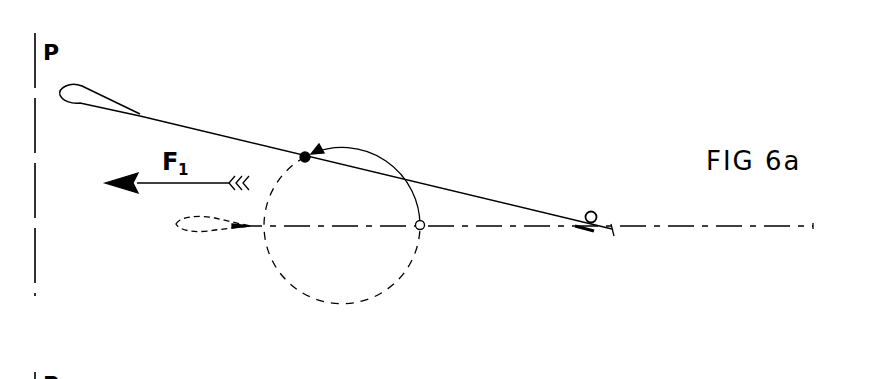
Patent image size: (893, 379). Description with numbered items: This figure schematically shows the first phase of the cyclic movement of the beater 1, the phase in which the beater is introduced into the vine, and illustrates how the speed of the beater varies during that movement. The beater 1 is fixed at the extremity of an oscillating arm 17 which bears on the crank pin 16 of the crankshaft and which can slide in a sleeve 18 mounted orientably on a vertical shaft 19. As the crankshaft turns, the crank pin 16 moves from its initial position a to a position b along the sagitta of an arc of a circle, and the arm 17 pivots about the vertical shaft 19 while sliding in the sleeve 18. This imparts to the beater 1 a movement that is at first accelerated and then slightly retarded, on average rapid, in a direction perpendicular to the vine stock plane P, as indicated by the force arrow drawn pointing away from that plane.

The beater 1 is at (106, 99).
The crank pin 16 is at (307, 152).
The oscillating arm 17 is at (468, 193).
The sleeve 18 is at (586, 232).
The vertical shaft 19 is at (597, 216).